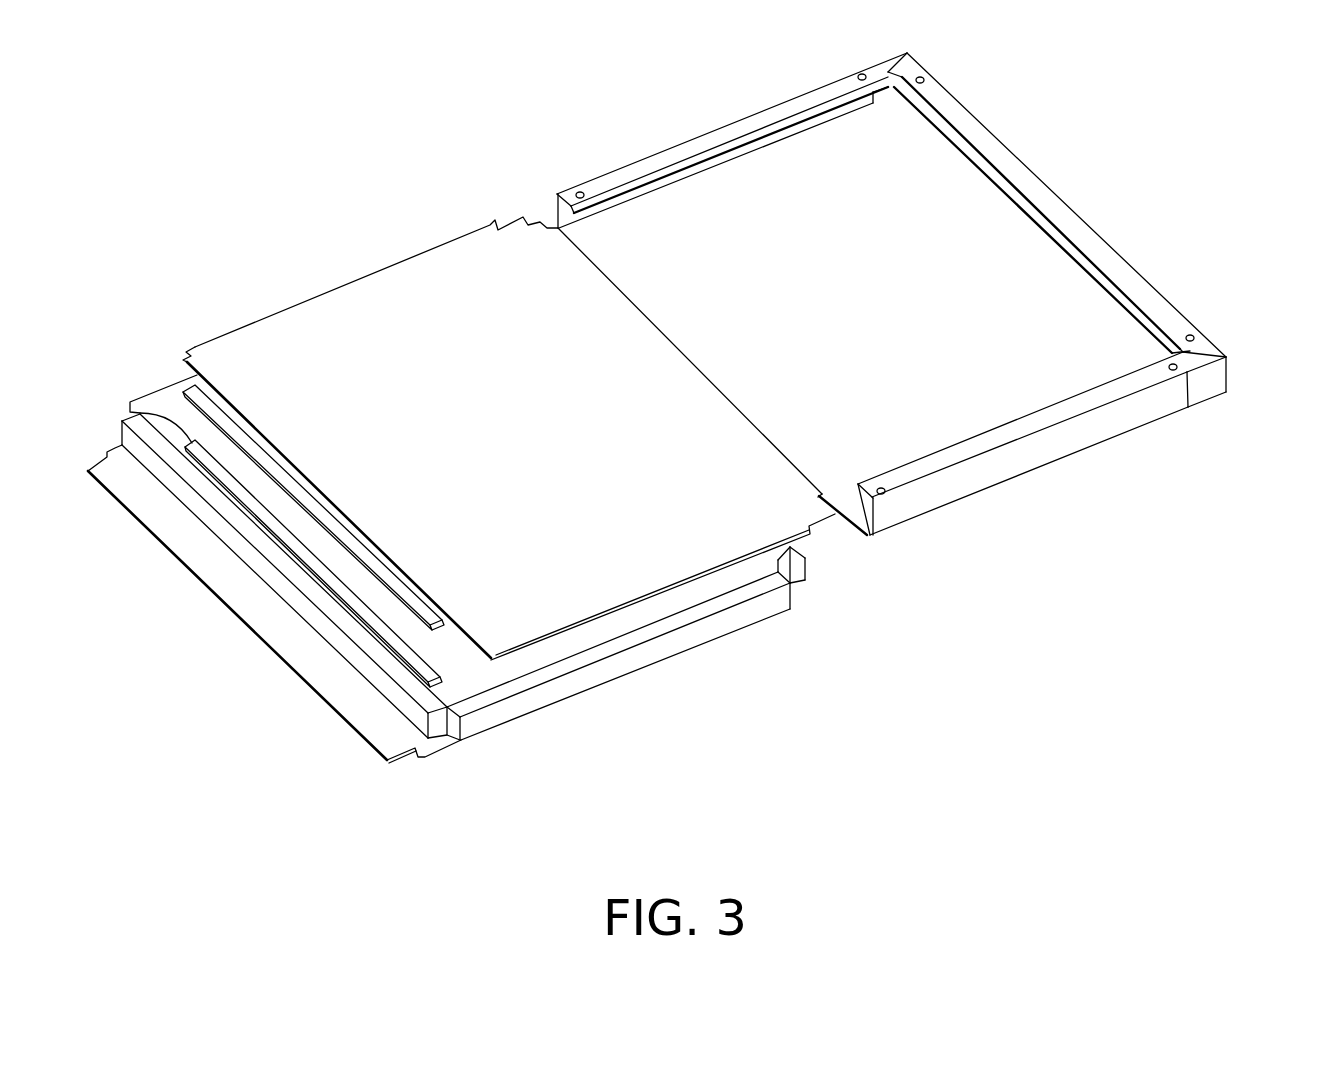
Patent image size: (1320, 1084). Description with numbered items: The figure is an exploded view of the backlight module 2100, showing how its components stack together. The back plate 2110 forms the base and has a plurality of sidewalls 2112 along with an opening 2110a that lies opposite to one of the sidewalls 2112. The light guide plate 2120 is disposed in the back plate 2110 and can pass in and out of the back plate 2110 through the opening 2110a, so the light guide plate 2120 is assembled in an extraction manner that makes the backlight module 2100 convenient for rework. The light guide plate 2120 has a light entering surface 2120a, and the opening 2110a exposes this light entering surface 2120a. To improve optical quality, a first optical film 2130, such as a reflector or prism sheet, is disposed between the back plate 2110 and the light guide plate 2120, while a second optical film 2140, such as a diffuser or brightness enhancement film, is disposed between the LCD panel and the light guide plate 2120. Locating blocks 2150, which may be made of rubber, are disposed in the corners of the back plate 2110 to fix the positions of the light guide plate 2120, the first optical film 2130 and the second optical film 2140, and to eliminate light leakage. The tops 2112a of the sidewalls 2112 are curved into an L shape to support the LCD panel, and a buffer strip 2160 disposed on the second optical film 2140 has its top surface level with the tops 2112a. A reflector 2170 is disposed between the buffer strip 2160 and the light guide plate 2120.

The backlight module 2100 is at (1310, 671).
The back plate 2110 is at (928, 371).
The opening 2110a is at (855, 502).
The sidewalls 2112 is at (1003, 468).
The tops of the sidewalls 2112a is at (1092, 268).
The light guide plate 2120 is at (535, 694).
The light entering surface 2120a is at (386, 684).
The first optical film 2130 is at (280, 625).
The second optical film 2140 is at (362, 305).
The locating blocks 2150 is at (1213, 385).
The buffer strip 2160 is at (193, 388).
The reflector 2170 is at (125, 413).